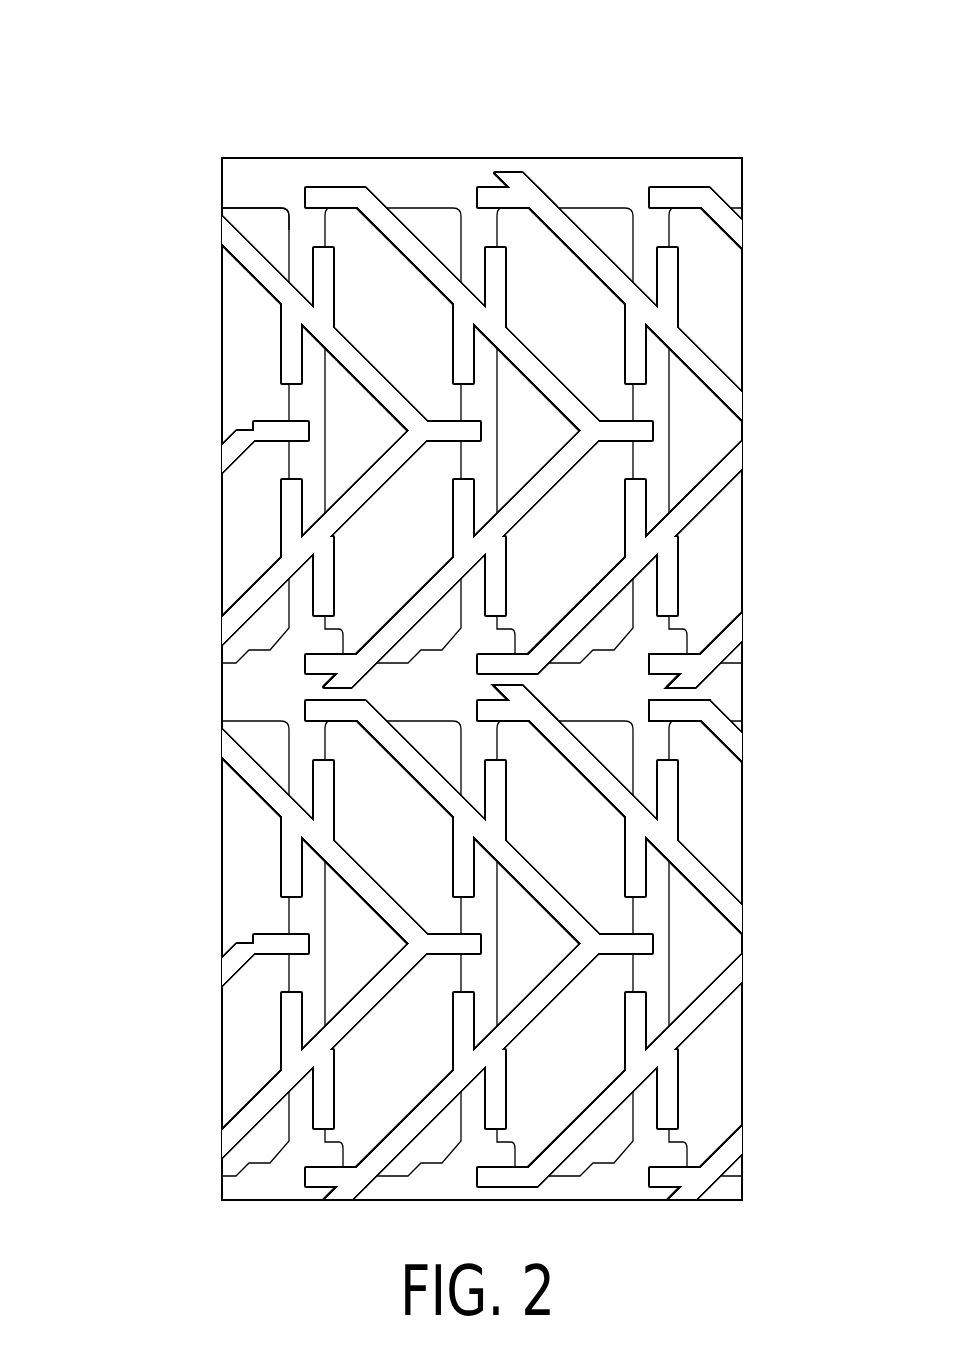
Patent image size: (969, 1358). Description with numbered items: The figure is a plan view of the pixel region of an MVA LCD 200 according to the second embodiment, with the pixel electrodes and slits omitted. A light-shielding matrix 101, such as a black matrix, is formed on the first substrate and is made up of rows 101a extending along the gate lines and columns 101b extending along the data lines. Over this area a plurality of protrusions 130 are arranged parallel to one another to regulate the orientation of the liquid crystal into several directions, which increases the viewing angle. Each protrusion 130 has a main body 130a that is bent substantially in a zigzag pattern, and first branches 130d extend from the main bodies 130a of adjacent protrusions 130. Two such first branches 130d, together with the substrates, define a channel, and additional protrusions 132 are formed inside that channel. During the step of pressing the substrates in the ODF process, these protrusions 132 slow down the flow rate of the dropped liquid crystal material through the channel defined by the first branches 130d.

The MVA LCD 200 is at (93, 73).
The light-shielding matrix 101 is at (262, 157).
The rows of the light-shielding matrix 101a is at (237, 184).
The columns of the light-shielding matrix 101b is at (290, 393).
The protrusion 130 is at (590, 252).
The main body 130a is at (712, 500).
The first branch 130d is at (668, 657).
The protrusion 132 is at (513, 693).